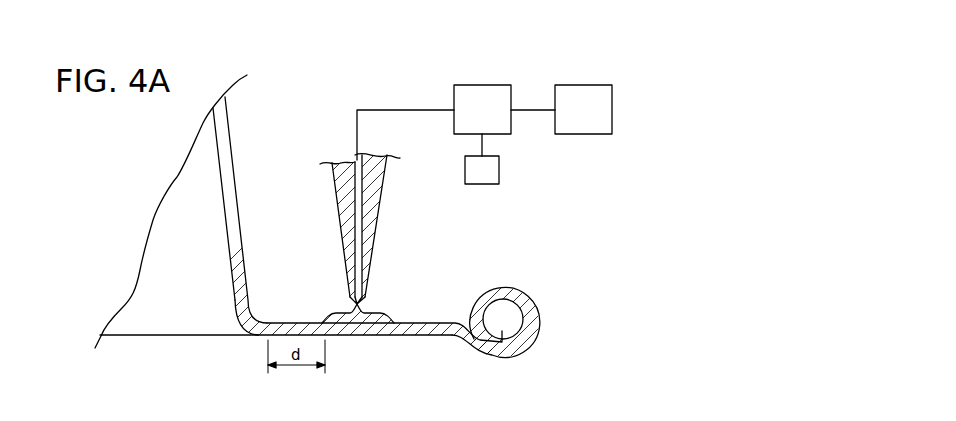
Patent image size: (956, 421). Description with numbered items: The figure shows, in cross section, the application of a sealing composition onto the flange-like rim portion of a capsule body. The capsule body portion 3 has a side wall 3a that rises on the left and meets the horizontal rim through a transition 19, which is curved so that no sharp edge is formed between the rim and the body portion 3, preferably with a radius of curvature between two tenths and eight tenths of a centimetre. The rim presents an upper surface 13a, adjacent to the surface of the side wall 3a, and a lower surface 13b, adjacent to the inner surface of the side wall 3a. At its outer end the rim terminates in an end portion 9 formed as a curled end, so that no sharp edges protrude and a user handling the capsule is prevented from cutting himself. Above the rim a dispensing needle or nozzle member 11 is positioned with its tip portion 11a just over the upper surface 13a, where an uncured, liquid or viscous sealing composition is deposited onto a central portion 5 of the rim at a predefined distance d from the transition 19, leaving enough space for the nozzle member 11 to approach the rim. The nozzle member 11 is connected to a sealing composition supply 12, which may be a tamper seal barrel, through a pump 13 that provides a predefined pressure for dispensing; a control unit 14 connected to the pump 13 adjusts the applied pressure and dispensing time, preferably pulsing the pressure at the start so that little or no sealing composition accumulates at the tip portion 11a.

The capsule body portion 3 is at (228, 133).
The side wall 3a is at (234, 181).
The central portion 5 is at (354, 336).
The end portion 9 is at (535, 320).
The nozzle member 11 is at (339, 216).
The tip portion 11a is at (349, 300).
The sealing composition supply 12 is at (594, 119).
The pump 13 is at (493, 119).
The upper surface 13a is at (413, 323).
The lower surface 13b is at (385, 336).
The control unit 14 is at (493, 179).
The transition 19 is at (243, 334).